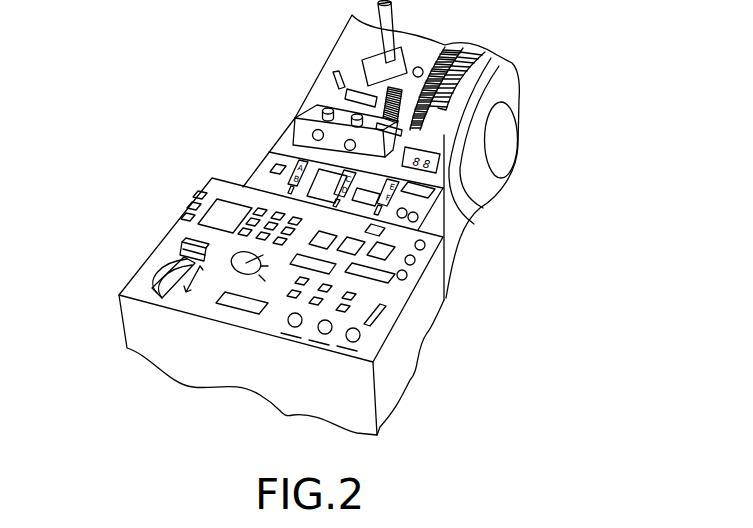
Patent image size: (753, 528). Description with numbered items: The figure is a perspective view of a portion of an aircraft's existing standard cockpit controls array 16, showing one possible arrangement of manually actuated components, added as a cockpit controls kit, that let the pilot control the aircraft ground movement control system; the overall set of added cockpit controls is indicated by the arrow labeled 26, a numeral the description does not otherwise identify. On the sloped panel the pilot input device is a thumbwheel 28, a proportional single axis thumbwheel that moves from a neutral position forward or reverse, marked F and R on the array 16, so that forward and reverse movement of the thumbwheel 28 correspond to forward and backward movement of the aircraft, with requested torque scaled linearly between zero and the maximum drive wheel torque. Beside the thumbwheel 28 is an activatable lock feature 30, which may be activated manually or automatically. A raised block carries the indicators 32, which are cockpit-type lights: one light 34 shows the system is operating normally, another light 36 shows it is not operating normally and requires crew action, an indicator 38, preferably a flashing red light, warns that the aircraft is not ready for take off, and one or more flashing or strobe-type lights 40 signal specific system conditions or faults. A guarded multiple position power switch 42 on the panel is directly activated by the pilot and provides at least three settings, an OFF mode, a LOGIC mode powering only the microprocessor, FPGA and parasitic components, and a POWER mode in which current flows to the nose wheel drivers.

The cockpit controls array 16 is at (530, 211).
The control console 26 is at (162, 126).
The thumbwheel 28 is at (162, 287).
The activatable lock feature 30 is at (192, 250).
The indicators 32 is at (271, 105).
The light 34 is at (356, 145).
The light 36 is at (313, 136).
The indicator 38 is at (323, 112).
The flashing or strobe-type lights 40 is at (352, 118).
The guarded multiple position power switch 42 is at (243, 272).